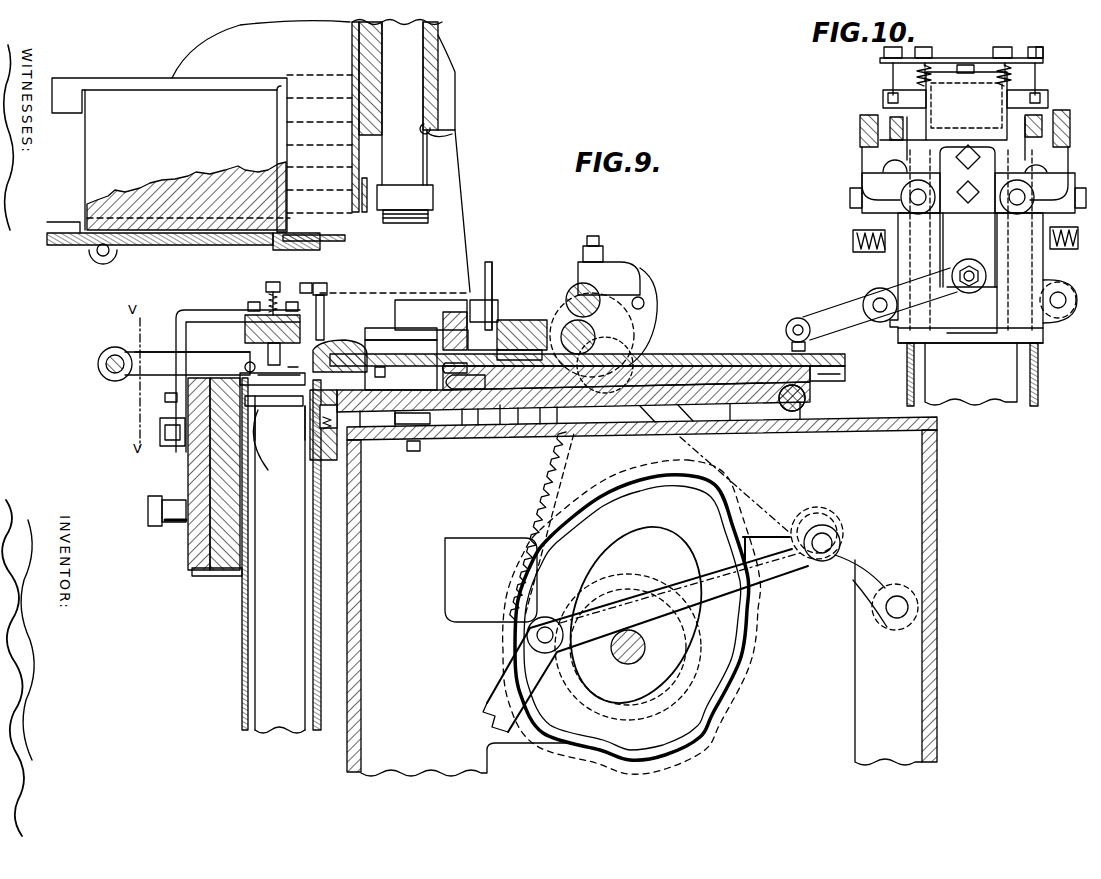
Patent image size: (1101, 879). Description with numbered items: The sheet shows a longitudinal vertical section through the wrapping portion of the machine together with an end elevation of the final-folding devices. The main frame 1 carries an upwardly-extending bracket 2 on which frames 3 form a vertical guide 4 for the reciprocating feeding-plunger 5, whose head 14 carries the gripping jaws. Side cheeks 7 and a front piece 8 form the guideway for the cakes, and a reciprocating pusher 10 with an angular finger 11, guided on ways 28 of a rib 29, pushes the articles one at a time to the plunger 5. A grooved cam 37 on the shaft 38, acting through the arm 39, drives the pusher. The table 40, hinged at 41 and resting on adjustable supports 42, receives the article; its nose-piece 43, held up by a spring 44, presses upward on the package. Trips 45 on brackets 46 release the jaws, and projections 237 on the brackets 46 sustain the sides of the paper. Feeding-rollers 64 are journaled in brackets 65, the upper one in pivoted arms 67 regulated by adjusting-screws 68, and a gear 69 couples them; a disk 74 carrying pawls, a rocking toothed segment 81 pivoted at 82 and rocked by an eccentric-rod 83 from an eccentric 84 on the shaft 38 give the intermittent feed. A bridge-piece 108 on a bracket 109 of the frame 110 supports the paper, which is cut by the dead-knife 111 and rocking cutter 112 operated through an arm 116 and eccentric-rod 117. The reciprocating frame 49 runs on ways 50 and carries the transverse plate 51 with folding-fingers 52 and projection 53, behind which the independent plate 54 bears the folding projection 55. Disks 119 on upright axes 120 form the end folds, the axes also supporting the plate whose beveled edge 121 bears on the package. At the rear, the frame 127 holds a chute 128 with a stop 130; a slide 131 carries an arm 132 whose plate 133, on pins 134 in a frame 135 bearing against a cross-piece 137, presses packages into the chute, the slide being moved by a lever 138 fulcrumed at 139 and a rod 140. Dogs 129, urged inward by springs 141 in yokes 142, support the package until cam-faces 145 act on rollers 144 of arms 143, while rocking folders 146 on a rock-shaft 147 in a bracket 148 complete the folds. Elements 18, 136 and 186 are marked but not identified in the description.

In FIG. 9, the frame 1 is at (361, 540).
In FIG. 9, the upwardly-extending bracket 2 is at (448, 163).
In FIG. 9, the frames 3 is at (352, 34).
In FIG. 9, the vertical guide 4 is at (456, 131).
In FIG. 9, the feeding-plunger 5 is at (402, 103).
In FIG. 9, the side cheeks 7 is at (201, 126).
In FIG. 9, the front piece 8 is at (352, 58).
In FIG. 9, the reciprocating pusher 10 is at (232, 242).
In FIG. 9, the angular finger 11 is at (328, 241).
In FIG. 9, the head of the plunger 14 is at (405, 197).
In FIG. 9, the plunger plate 18 is at (430, 216).
In FIG. 9, the ways 28 is at (82, 222).
In FIG. 9, the rib 29 is at (188, 196).
In FIG. 9, the grooved cam 37 is at (632, 617).
In FIG. 9, the shaft 38 is at (612, 640).
In FIG. 9, the arm 39 is at (492, 690).
In FIG. 9, the table 40 is at (478, 414).
In FIG. 9, the hinge 41 is at (815, 399).
In FIG. 9, the adjustable supports 42 is at (412, 438).
In FIG. 9, the nose-piece 43 is at (303, 402).
In FIG. 9, the spring 44 is at (305, 440).
In FIG. 9, the trips 45 is at (440, 300).
In FIG. 9, the brackets 46 is at (440, 360).
In FIG. 9, the longitudinally-reciprocating frame 49 is at (702, 351).
In FIG. 9, the ways 50 is at (846, 377).
In FIG. 9, the transverse plate 51 is at (500, 320).
In FIG. 9, the folding-fingers 52 is at (452, 384).
In FIG. 9, the horizontal projection 53 is at (445, 368).
In FIG. 9, the independent plate 54 is at (503, 417).
In FIG. 9, the folding projection 55 is at (395, 305).
In FIG. 9, the feeding-rollers 64 is at (578, 318).
In FIG. 9, the brackets 65 is at (609, 278).
In FIG. 9, the arms 67 is at (642, 285).
In FIG. 9, the adjusting-screws 68 is at (596, 239).
In FIG. 9, the gear 69 is at (279, 80).
In FIG. 9, the disk 74 is at (548, 318).
In FIG. 9, the rocking toothed segment 81 is at (515, 550).
In FIG. 9, the pivot 82 is at (908, 607).
In FIG. 9, the eccentric-rod 83 is at (793, 540).
In FIG. 9, the eccentric 84 is at (549, 662).
In FIG. 9, the bridge-piece 108 is at (476, 300).
In FIG. 9, the bracket 109 is at (495, 300).
In FIG. 9, the frame 110 is at (542, 417).
In FIG. 9, the stationary blade 111 is at (525, 330).
In FIG. 9, the rocking cutter 112 is at (494, 305).
In FIG. 9, the arm 116 is at (333, 285).
In FIG. 9, the eccentric-rod 117 is at (306, 298).
In FIG. 9, the disks 119 is at (342, 413).
In FIG. 9, the upright axes 120 is at (350, 342).
In FIG. 9, the beveled front edge 121 is at (378, 366).
In FIG. 9, the frame 127 is at (233, 576).
In FIG. 10, the frame 127 is at (1030, 274).
In FIG. 9, the guideway 128 is at (242, 632).
In FIG. 10, the guideway 128 is at (1010, 365).
In FIG. 9, the dogs 129 is at (272, 449).
In FIG. 10, the dogs 129 is at (880, 175).
In FIG. 9, the gage 130 is at (250, 393).
In FIG. 9, the reciprocating slide 131 is at (188, 463).
In FIG. 10, the reciprocating slide 131 is at (966, 244).
In FIG. 9, the upwardly-extending arm 132 is at (178, 322).
In FIG. 10, the upwardly-extending arm 132 is at (966, 102).
In FIG. 9, the plate 133 is at (250, 362).
In FIG. 9, the pins 134 is at (268, 348).
In FIG. 10, the pins 134 is at (860, 120).
In FIG. 9, the frame 135 is at (246, 320).
In FIG. 10, the frame 135 is at (883, 97).
In FIG. 9, the spring 136 is at (268, 296).
In FIG. 10, the spring 136 is at (932, 70).
In FIG. 9, the cross-piece 137 is at (266, 285).
In FIG. 10, the cross-piece 137 is at (975, 57).
In FIG. 9, the lever 138 is at (166, 526).
In FIG. 10, the lever 138 is at (826, 318).
In FIG. 10, the fulcrum 139 is at (873, 298).
In FIG. 10, the rod 140 is at (790, 343).
In FIG. 10, the springs 141 is at (858, 232).
In FIG. 10, the yokes 142 is at (853, 240).
In FIG. 10, the arms 143 is at (862, 200).
In FIG. 10, the rollers 144 is at (1003, 230).
In FIG. 10, the cam-faces 145 is at (895, 160).
In FIG. 9, the rocking folders 146 is at (272, 377).
In FIG. 9, the rock-shaft 147 is at (98, 364).
In FIG. 9, the bracket 148 is at (137, 352).
In FIG. 10, the bolt 186 is at (1020, 62).
In FIG. 9, the projections 237 is at (401, 340).